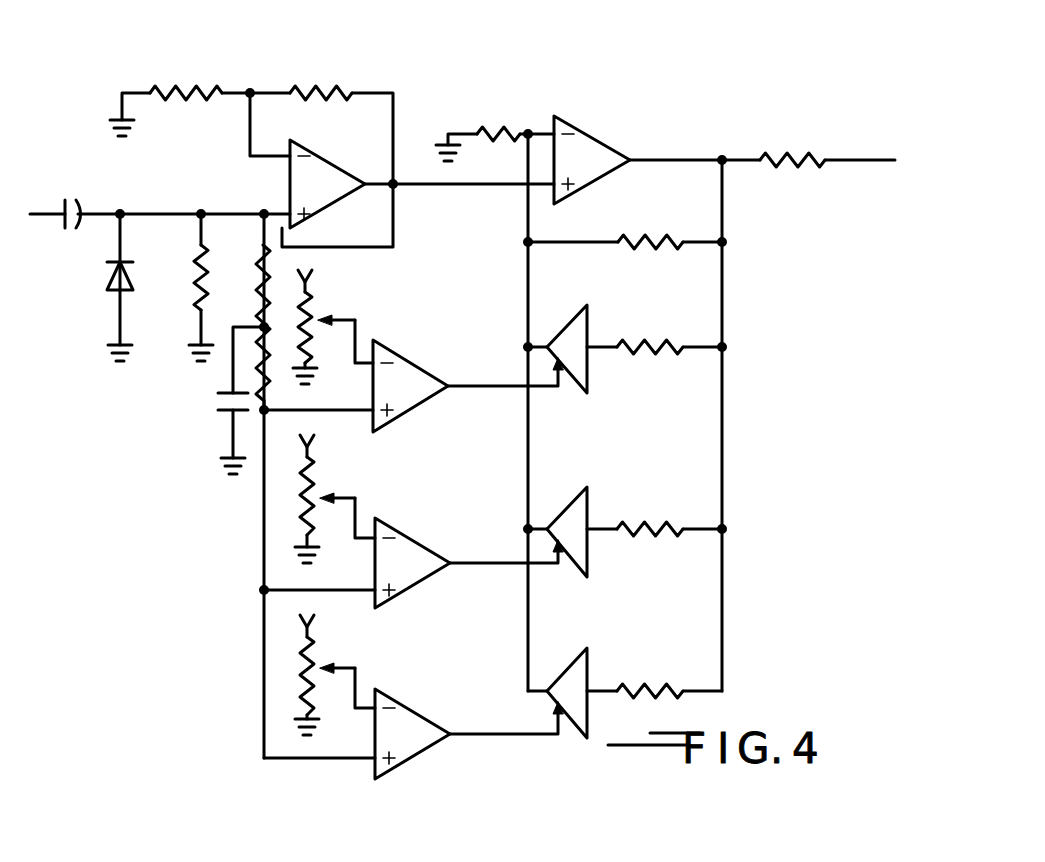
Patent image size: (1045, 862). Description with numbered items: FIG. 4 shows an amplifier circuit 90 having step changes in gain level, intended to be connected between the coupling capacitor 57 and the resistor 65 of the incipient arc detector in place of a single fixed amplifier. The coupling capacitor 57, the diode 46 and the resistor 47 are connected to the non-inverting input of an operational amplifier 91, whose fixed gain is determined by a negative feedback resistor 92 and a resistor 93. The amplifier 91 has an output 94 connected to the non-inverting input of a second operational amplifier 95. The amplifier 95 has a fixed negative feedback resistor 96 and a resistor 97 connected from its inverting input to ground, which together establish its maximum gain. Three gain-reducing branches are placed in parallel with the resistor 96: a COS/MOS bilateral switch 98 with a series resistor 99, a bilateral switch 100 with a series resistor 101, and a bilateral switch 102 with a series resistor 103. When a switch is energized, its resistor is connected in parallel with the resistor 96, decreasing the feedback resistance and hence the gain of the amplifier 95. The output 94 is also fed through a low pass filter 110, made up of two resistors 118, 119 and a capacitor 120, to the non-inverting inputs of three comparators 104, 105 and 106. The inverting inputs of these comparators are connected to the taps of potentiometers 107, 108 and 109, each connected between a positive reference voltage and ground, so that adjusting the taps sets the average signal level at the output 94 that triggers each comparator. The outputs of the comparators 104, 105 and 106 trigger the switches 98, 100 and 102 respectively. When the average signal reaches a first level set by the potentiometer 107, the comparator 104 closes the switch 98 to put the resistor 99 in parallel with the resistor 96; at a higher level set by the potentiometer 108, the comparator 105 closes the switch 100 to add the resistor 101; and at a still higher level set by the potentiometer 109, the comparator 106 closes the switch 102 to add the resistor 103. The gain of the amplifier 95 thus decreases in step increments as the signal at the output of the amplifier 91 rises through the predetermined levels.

The diode 46 is at (106, 272).
The resistor 47 is at (208, 282).
The coupling capacitor 57 is at (64, 200).
The resistor 65 is at (792, 154).
The amplifier circuit 90 is at (732, 106).
The operational amplifier 91 is at (331, 206).
The negative feedback resistor 92 is at (316, 91).
The resistor 93 is at (182, 92).
The output 94 is at (447, 188).
The operational amplifier 95 is at (590, 134).
The negative feedback resistor 96 is at (650, 241).
The resistor 97 is at (500, 127).
The bilateral switch 98 is at (588, 312).
The series resistor 99 is at (660, 343).
The bilateral switch 100 is at (594, 494).
The series resistor 101 is at (655, 524).
The bilateral switch 102 is at (590, 652).
The series resistor 103 is at (658, 688).
The comparator 104 is at (412, 360).
The comparator 105 is at (420, 544).
The comparator 106 is at (420, 716).
The potentiometer 107 is at (317, 301).
The potentiometer 108 is at (319, 490).
The potentiometer 109 is at (319, 660).
The low pass filter 110 is at (192, 400).
The resistor 118 is at (272, 250).
The resistor 119 is at (268, 378).
The capacitor 120 is at (227, 412).